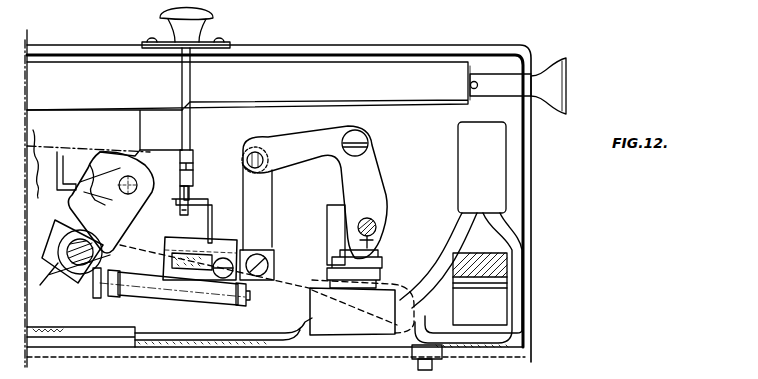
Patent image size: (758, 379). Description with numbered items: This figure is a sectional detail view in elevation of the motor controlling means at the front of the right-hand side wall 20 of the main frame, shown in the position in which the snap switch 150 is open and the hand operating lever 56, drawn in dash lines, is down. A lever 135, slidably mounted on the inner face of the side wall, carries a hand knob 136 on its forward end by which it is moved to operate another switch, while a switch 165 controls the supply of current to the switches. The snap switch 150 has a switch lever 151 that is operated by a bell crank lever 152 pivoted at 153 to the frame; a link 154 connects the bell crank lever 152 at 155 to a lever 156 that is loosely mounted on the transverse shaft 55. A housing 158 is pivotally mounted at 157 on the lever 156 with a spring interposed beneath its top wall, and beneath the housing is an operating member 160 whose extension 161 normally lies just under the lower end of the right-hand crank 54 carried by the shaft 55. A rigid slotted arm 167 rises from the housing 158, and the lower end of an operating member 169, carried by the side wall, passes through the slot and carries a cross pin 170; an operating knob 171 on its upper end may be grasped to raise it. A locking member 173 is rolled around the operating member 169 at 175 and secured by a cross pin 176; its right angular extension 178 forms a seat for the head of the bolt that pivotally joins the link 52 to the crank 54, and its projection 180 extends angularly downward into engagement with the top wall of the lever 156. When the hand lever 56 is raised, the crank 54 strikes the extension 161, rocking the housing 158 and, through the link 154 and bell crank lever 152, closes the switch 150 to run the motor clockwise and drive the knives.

The side walls 20 is at (516, 216).
The link 52 is at (27, 146).
The crank 54 is at (80, 280).
The shaft 55 is at (66, 252).
The hand operating lever 56 is at (292, 298).
The lever 135 is at (276, 76).
The hand knob 136 is at (565, 58).
The snap switch 150 is at (340, 330).
The switch lever 151 is at (378, 228).
The bell crank lever 152 is at (308, 137).
The pivot 153 is at (362, 138).
The link 154 is at (266, 189).
The connection 155 is at (270, 263).
The lever 156 is at (153, 240).
The pivot 157 is at (224, 300).
The housing 158 is at (240, 236).
The operating member 160 is at (166, 292).
The extension 161 is at (98, 300).
The switch 165 is at (482, 167).
The rigid arm 167 is at (214, 216).
The operating member 169 is at (192, 79).
The cross pin 170 is at (190, 205).
The operating knob 171 is at (204, 22).
The locking member 173 is at (107, 146).
The rolled end 175 is at (180, 152).
The cross pin 176 is at (193, 160).
The right angular extension 178 is at (64, 156).
The projection 180 is at (96, 206).